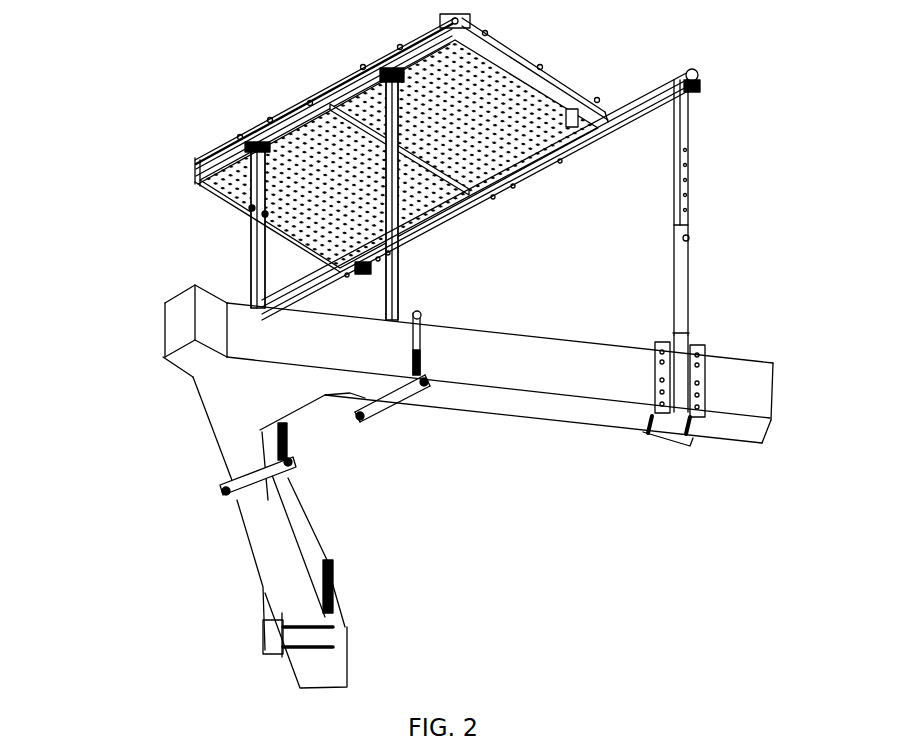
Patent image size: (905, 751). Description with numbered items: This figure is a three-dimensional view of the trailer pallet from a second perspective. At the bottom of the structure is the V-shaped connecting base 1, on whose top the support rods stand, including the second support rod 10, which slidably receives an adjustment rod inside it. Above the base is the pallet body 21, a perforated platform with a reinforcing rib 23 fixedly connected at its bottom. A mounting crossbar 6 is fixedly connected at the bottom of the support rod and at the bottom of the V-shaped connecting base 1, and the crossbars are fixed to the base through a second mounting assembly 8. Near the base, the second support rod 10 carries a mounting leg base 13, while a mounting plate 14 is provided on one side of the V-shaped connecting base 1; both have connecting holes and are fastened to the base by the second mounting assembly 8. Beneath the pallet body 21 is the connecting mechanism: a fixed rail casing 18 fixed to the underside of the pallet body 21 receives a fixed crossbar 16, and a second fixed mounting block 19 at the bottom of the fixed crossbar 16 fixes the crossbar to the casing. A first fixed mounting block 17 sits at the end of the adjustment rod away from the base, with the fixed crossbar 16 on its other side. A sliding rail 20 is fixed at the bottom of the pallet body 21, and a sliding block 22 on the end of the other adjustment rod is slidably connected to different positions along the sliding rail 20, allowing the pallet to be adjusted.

The V-shaped connecting base 1 is at (210, 365).
The mounting crossbar 6 is at (227, 482).
The second mounting assembly 8 is at (283, 628).
The second support rod 10 is at (683, 277).
The mounting leg base 13 is at (680, 372).
The mounting plate 14 is at (333, 598).
The fixed crossbar 16 is at (699, 73).
The first fixed mounting block 17 is at (700, 85).
The fixed rail casing 18 is at (570, 116).
The second fixed mounting block 19 is at (600, 140).
The sliding rail 20 is at (193, 180).
The pallet body 21 is at (285, 108).
The sliding block 22 is at (215, 150).
The reinforcing rib 23 is at (258, 192).